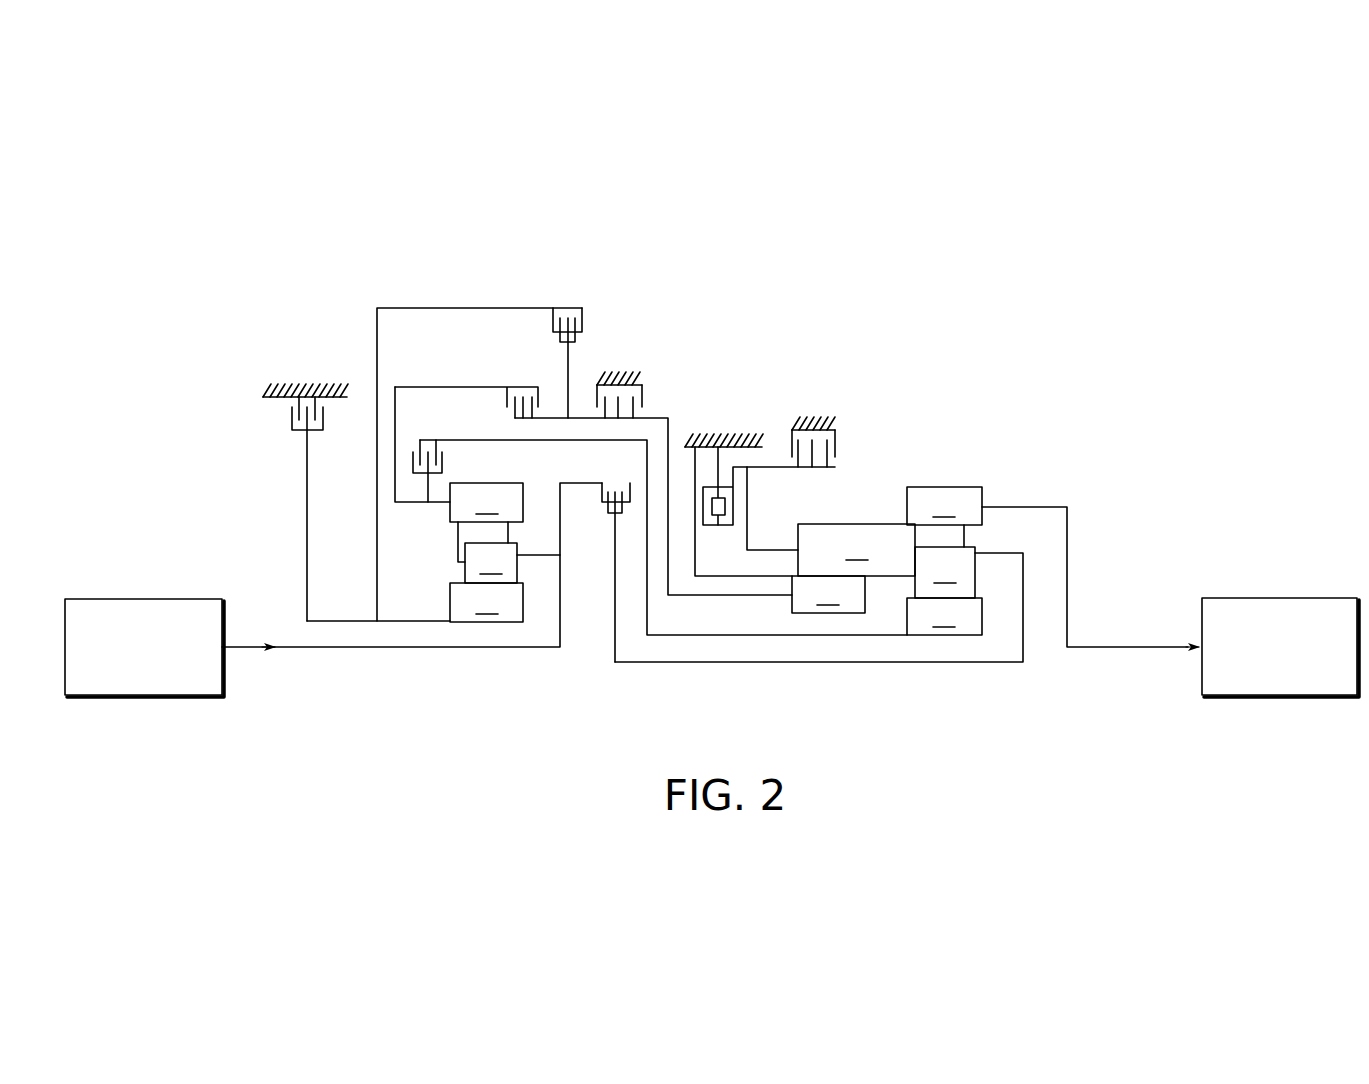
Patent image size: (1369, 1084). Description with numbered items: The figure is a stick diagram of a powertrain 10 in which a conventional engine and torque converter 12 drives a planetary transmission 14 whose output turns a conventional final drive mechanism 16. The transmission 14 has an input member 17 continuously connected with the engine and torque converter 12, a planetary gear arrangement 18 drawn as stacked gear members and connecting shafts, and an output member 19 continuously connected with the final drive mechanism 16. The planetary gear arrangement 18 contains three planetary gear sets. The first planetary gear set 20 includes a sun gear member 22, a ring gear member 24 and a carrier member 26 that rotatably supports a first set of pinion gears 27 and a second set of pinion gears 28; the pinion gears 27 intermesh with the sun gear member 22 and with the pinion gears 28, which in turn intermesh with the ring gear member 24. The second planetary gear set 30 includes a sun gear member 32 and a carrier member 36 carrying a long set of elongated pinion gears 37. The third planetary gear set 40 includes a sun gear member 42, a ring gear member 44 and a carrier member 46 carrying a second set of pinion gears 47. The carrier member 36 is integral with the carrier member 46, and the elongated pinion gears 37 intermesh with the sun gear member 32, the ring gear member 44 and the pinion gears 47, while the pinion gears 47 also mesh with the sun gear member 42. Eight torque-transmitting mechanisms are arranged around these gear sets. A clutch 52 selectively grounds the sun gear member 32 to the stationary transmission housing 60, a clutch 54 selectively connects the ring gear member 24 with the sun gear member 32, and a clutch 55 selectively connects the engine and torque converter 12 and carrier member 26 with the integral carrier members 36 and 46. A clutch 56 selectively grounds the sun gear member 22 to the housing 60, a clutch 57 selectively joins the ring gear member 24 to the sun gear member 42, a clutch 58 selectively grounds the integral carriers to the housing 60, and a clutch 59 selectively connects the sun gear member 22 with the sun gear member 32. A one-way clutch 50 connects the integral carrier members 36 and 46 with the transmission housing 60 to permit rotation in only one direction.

The powertrain 10 is at (903, 248).
The engine and torque converter 12 is at (138, 598).
The planetary transmission 14 is at (1080, 330).
The final drive mechanism 16 is at (1290, 598).
The input member 17 is at (340, 650).
The planetary gear arrangement 18 is at (992, 287).
The output member 19 is at (1150, 650).
The first planetary gear set 20 is at (479, 604).
The sun gear member 22 is at (486, 602).
The ring gear member 24 is at (486, 502).
The carrier member 26 is at (535, 558).
The first set of pinion gears 27 is at (491, 563).
The second set of pinion gears 28 is at (463, 533).
The second planetary gear set 30 is at (831, 596).
The sun gear member 32 is at (832, 620).
The carrier member 36 is at (768, 546).
The first set of elongated pinion gears 37 is at (856, 550).
The third planetary gear set 40 is at (830, 585).
The sun gear member 42 is at (944, 616).
The ring gear member 44 is at (944, 506).
The carrier member 46 is at (1000, 550).
The second set of pinion gears 47 is at (945, 572).
The one-way clutch 50 is at (718, 470).
The clutch 52 is at (656, 400).
The clutch 54 is at (497, 405).
The clutch 55 is at (598, 511).
The clutch 56 is at (280, 410).
The clutch 57 is at (450, 452).
The clutch 58 is at (848, 448).
The clutch 59 is at (597, 315).
The transmission housing 60 is at (275, 383).